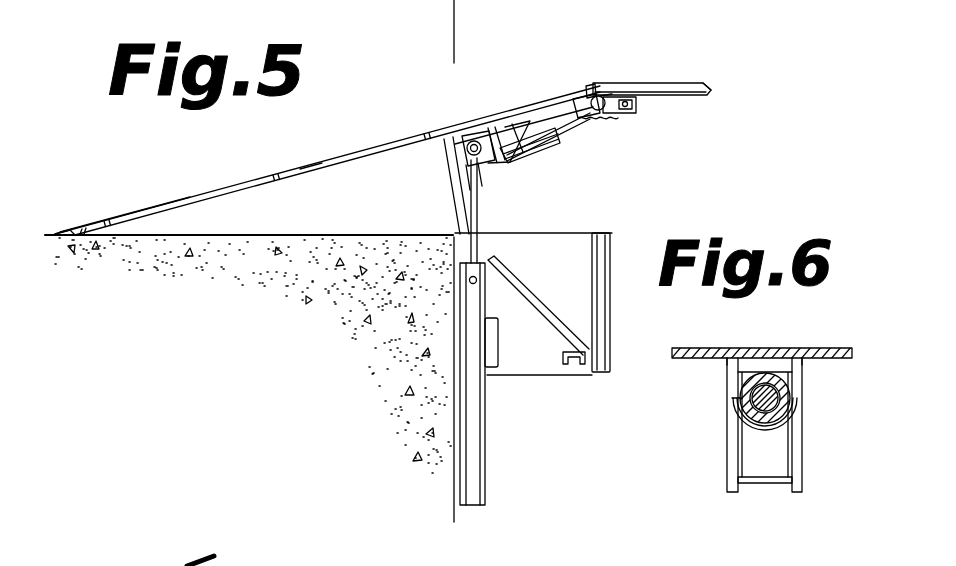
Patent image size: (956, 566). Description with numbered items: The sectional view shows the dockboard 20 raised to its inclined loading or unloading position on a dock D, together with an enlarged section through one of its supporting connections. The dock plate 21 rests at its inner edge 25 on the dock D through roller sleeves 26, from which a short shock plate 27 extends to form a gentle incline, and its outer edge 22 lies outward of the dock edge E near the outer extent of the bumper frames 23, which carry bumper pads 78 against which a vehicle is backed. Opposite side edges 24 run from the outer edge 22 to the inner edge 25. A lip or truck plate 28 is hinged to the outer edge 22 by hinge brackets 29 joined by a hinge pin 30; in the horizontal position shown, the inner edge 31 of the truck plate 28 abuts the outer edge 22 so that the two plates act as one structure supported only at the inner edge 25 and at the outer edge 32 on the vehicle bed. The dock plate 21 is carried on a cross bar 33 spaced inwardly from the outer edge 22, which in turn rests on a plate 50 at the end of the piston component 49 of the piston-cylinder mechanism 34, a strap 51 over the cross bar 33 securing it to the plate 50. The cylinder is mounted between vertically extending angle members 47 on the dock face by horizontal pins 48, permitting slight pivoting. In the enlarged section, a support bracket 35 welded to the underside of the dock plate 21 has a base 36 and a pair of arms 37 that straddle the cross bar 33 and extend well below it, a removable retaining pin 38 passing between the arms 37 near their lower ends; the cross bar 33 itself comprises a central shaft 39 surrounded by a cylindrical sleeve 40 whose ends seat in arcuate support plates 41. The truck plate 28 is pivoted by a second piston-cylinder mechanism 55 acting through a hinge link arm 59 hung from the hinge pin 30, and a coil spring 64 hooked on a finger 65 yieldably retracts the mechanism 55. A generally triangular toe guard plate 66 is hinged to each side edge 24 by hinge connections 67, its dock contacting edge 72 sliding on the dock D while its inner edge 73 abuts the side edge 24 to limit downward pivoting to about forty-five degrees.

In FIG. 5, the dockboard 20 is at (648, 172).
In FIG. 5, the dock plate 21 is at (322, 163).
In FIG. 6, the dock plate 21 is at (688, 348).
In FIG. 5, the outer edge 22 is at (597, 92).
In FIG. 5, the bumper frames 23 is at (548, 368).
In FIG. 5, the side edges 24 is at (170, 203).
In FIG. 5, the inner edge 25 is at (82, 238).
In FIG. 5, the roller sleeves 26 is at (84, 228).
In FIG. 5, the shock plate 27 is at (68, 232).
In FIG. 5, the truck plate 28 is at (654, 84).
In FIG. 5, the hinge brackets 29 is at (572, 98).
In FIG. 5, the hinge pin 30 is at (632, 95).
In FIG. 5, the inner edge 31 is at (606, 98).
In FIG. 5, the outer edge 32 is at (702, 84).
In FIG. 5, the cross bar 33 is at (464, 156).
In FIG. 6, the cross bar 33 is at (796, 395).
In FIG. 5, the piston-cylinder mechanism 34 is at (480, 246).
In FIG. 5, the support brackets 35 is at (454, 136).
In FIG. 6, the support brackets 35 is at (818, 348).
In FIG. 6, the base 36 is at (754, 371).
In FIG. 6, the arms 37 is at (727, 462).
In FIG. 6, the retaining pins 38 is at (762, 484).
In FIG. 6, the central shaft 39 is at (804, 410).
In FIG. 6, the cylindrical sleeve 40 is at (738, 388).
In FIG. 6, the arcuate support plates 41 is at (770, 418).
In FIG. 5, the angle members 47 is at (486, 428).
In FIG. 5, the horizontal pins 48 is at (488, 292).
In FIG. 5, the piston component 49 is at (485, 226).
In FIG. 5, the plate 50 is at (470, 190).
In FIG. 5, the strap 51 is at (487, 150).
In FIG. 5, the piston-cylinder mechanism 55 is at (500, 165).
In FIG. 5, the hinge link arm 59 is at (604, 120).
In FIG. 5, the coil spring 64 is at (540, 150).
In FIG. 5, the finger 65 is at (634, 116).
In FIG. 5, the toe guard plate 66 is at (360, 234).
In FIG. 5, the hinge connections 67 is at (110, 220).
In FIG. 5, the dock contacting edge 72 is at (268, 238).
In FIG. 5, the inner edges 73 is at (338, 162).
In FIG. 5, the bumper pads 78 is at (610, 328).
In FIG. 5, the dock D is at (312, 310).
In FIG. 5, the edge E is at (445, 243).